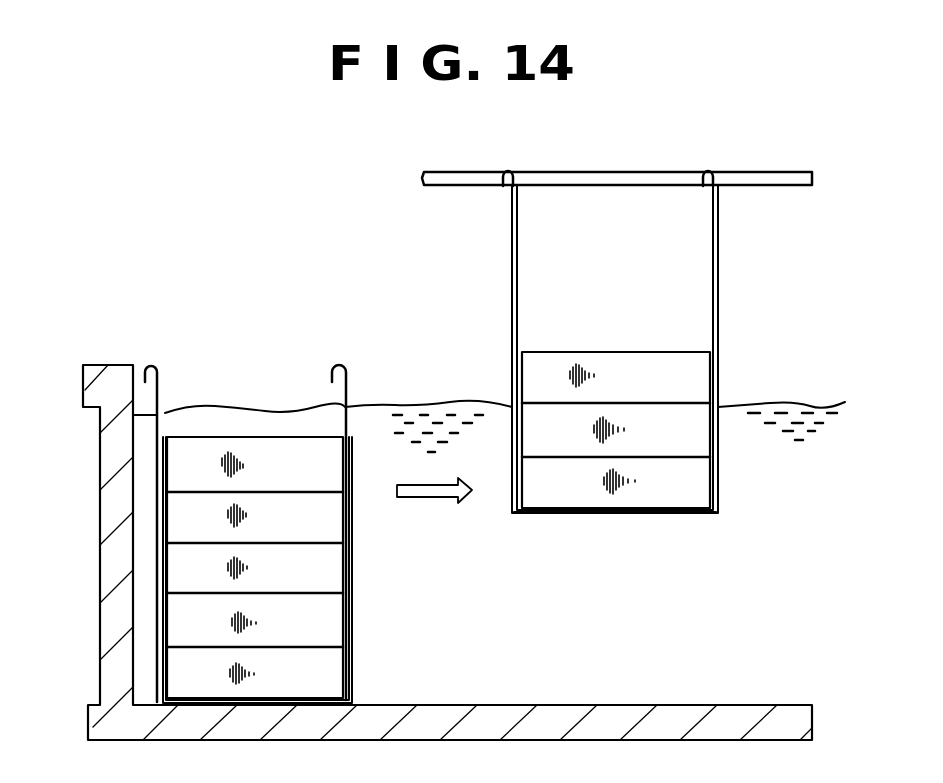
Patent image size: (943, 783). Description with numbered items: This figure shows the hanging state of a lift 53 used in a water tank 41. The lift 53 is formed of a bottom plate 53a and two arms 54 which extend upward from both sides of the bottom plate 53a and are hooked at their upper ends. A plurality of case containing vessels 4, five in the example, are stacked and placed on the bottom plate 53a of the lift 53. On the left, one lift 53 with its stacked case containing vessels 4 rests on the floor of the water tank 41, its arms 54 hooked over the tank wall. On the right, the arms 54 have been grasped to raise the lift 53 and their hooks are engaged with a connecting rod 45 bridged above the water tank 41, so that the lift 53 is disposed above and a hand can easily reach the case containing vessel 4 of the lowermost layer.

The case containing vessel 4 is at (242, 447).
The water tank 41 is at (108, 562).
The connecting rod 45 is at (763, 175).
The lift 53 is at (372, 624).
The bottom plate 53a is at (675, 514).
The arm 54 is at (511, 264).